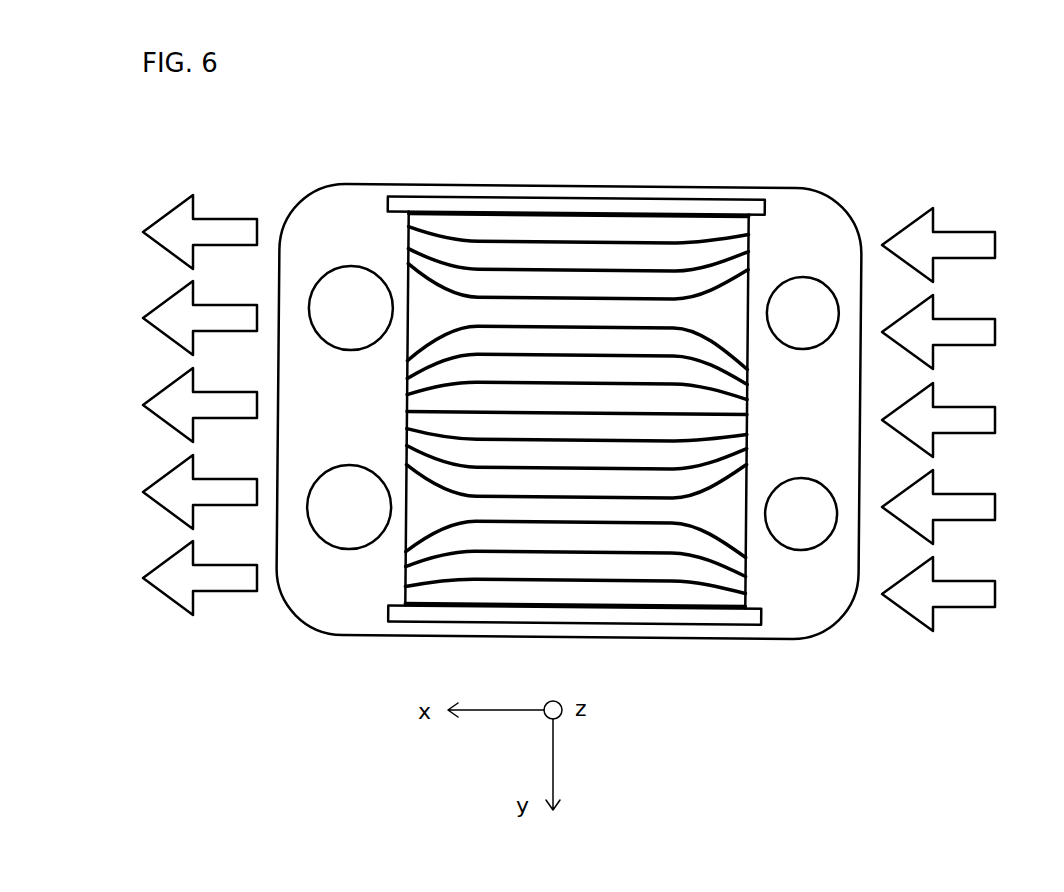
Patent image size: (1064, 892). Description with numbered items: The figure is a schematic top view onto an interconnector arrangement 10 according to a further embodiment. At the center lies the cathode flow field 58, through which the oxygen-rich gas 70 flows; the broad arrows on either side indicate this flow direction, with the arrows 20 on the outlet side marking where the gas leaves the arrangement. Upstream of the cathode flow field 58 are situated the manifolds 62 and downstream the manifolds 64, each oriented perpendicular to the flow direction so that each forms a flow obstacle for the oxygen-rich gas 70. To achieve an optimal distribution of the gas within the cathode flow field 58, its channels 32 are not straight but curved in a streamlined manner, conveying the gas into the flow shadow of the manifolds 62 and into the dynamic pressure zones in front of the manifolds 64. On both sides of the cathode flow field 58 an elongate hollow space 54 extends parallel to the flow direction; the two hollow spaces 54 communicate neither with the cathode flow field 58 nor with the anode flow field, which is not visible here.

The interconnector arrangement 10 is at (279, 163).
The outlet cooling air flow 20 is at (224, 393).
The oxygen-rich gas 70 is at (955, 406).
The elongate hollow space 54 is at (467, 198).
The cathode flow field 58 is at (574, 290).
The channels 32 is at (622, 243).
The manifolds 62 is at (815, 324).
The manifolds 64 is at (364, 323).